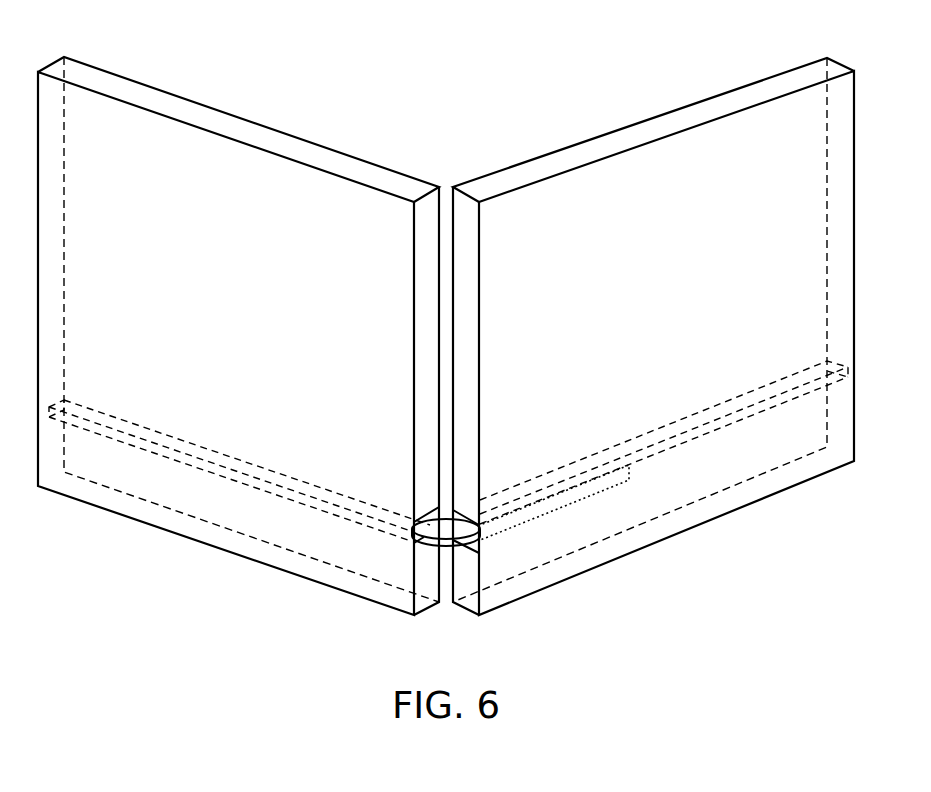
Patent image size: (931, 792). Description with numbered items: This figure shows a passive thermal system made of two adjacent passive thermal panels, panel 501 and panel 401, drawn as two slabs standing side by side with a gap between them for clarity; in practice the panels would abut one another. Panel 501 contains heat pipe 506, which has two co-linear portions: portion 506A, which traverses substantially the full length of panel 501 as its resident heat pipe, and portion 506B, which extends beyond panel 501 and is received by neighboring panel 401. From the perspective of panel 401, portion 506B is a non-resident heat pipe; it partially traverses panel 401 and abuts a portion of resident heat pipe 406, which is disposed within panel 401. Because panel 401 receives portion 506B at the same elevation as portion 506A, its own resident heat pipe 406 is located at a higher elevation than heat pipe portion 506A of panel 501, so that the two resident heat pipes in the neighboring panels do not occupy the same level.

The panel 501 is at (310, 168).
The panel 401 is at (583, 170).
The heat pipe 506 is at (313, 510).
The portion of heat pipe 506A is at (177, 457).
The portion of heat pipe 506B is at (577, 503).
The heat pipe 406 is at (725, 446).